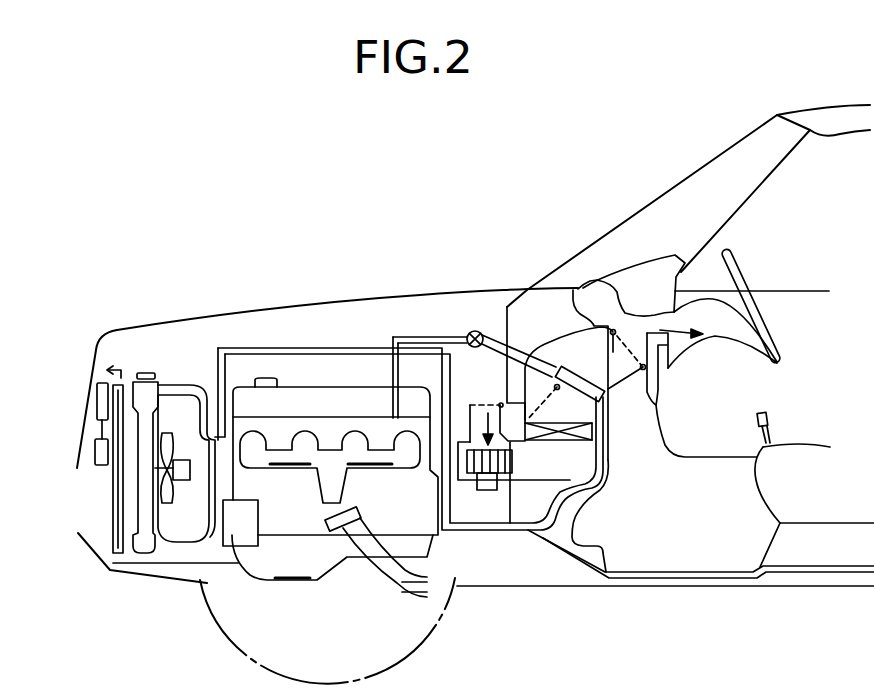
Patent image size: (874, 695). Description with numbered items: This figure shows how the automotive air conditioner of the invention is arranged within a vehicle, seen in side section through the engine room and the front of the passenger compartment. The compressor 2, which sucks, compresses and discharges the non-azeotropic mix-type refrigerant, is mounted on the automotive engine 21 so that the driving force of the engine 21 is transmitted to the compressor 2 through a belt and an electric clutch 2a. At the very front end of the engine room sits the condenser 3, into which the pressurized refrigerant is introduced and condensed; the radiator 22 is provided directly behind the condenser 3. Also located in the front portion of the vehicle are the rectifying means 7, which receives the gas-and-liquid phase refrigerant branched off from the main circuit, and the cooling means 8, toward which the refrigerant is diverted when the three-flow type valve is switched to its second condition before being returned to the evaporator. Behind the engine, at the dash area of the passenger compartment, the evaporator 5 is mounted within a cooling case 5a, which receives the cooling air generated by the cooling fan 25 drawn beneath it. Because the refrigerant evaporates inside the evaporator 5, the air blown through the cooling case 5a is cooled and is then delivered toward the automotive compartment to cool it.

The compressor 2 is at (232, 546).
The electric clutch 2a is at (200, 542).
The condenser 3 is at (110, 551).
The evaporator 5 is at (573, 443).
The cooling case 5a is at (612, 412).
The rectifying means 7 is at (97, 456).
The cooling means 8 is at (95, 392).
The engine 21 is at (285, 527).
The radiator 22 is at (143, 553).
The cooling fan 25 is at (485, 492).